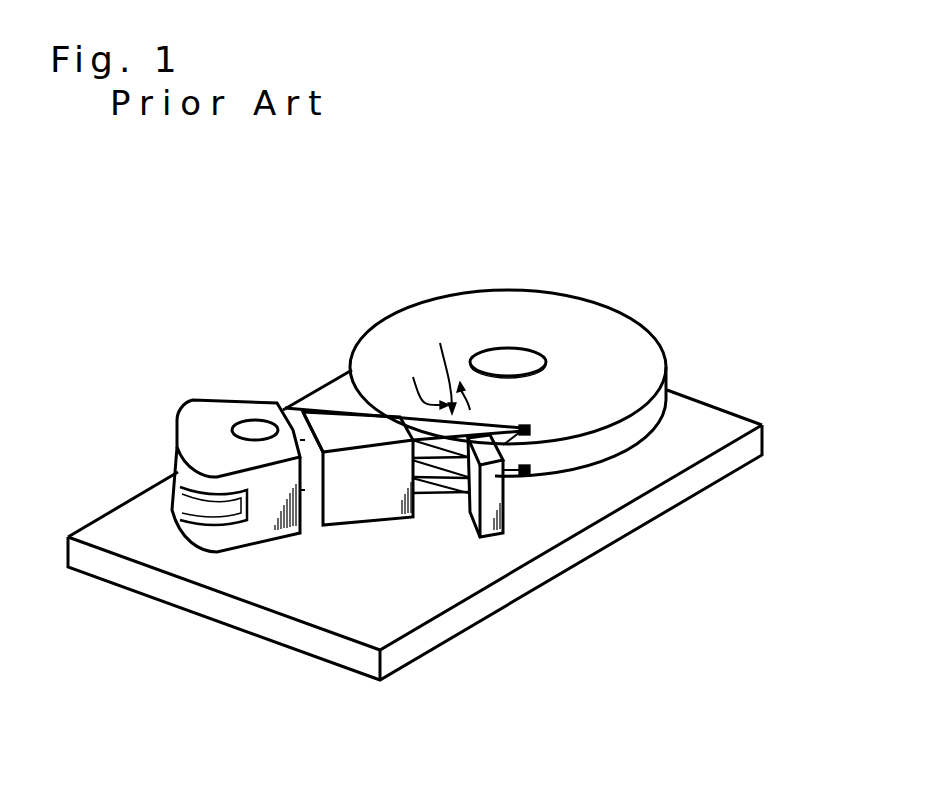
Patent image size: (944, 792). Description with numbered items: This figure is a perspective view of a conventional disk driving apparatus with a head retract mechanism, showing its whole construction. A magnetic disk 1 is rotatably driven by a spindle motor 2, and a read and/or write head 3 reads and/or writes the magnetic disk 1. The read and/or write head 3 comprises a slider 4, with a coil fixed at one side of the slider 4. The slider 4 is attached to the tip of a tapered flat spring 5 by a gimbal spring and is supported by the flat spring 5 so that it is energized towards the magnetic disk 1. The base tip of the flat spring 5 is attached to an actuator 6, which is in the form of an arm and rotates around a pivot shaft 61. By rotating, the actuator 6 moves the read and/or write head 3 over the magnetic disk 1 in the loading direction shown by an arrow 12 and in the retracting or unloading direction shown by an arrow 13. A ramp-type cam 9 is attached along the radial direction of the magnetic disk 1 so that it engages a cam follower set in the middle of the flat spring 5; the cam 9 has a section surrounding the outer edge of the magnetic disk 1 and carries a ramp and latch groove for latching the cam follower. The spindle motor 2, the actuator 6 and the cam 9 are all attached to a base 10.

The magnetic disk 1 is at (628, 318).
The spindle motor 2 is at (533, 347).
The read and/or write head 3 is at (530, 423).
The slider 4 is at (530, 428).
The flat spring 5 is at (507, 420).
The actuator 6 is at (212, 407).
The pivot shaft 61 is at (255, 427).
The ramp-type cam 9 is at (503, 518).
The base 10 is at (480, 620).
The arrow 12 is at (448, 363).
The arrow 13 is at (422, 378).